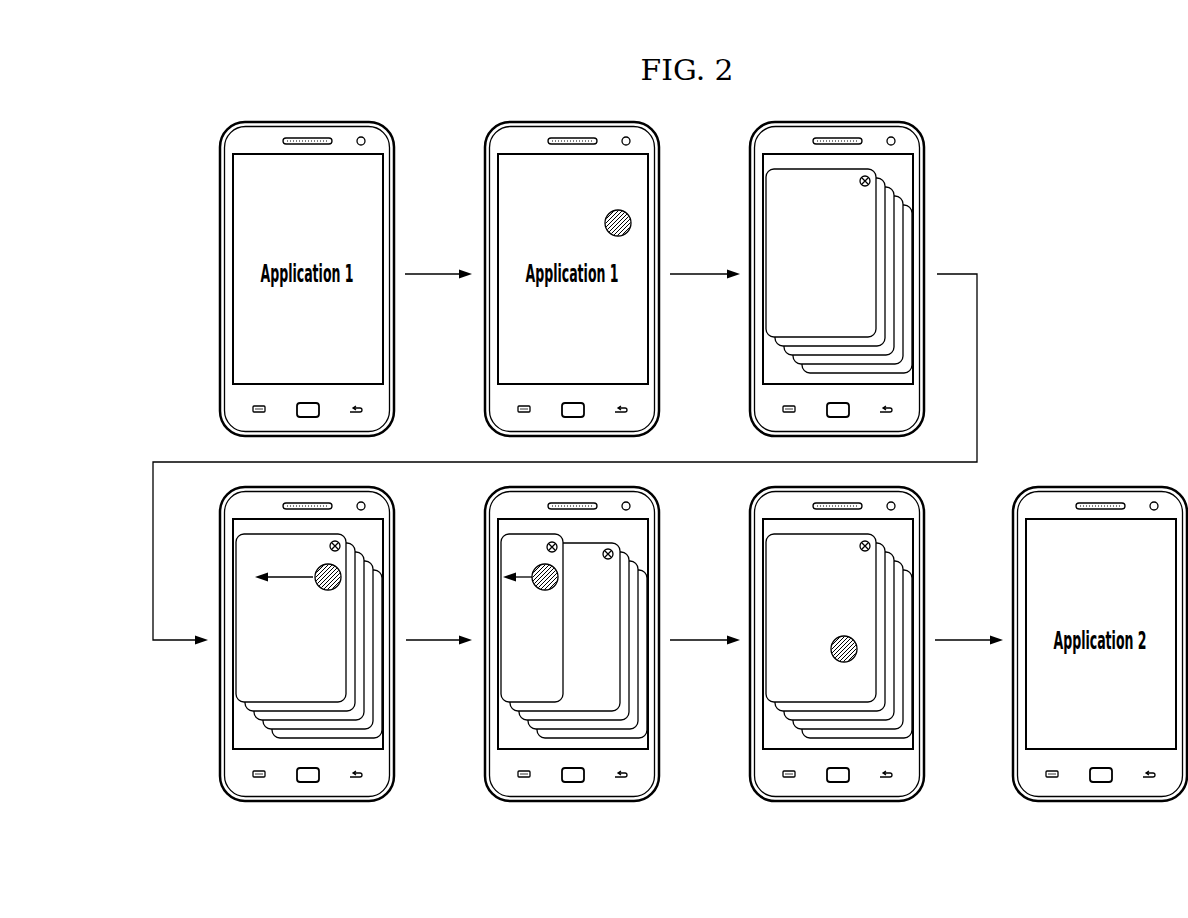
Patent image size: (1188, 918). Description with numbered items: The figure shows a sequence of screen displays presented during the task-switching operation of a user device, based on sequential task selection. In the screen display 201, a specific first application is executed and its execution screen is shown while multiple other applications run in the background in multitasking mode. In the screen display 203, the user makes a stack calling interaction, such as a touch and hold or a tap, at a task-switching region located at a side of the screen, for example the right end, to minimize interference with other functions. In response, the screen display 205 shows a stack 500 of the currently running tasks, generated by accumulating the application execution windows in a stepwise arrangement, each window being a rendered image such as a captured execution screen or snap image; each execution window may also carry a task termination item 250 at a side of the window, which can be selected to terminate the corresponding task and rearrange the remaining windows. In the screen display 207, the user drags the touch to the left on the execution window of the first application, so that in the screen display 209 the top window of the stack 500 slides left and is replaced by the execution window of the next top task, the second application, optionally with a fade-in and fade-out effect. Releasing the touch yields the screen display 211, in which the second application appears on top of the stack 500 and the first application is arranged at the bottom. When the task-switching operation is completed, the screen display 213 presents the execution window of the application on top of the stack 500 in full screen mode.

The task termination item 250 is at (875, 169).
The stack 500 is at (865, 222).
The screen display 201 is at (307, 265).
The screen display 203 is at (572, 265).
The screen display 205 is at (837, 265).
The screen display 207 is at (307, 658).
The screen display 209 is at (572, 658).
The screen display 211 is at (837, 658).
The screen display 213 is at (1100, 658).